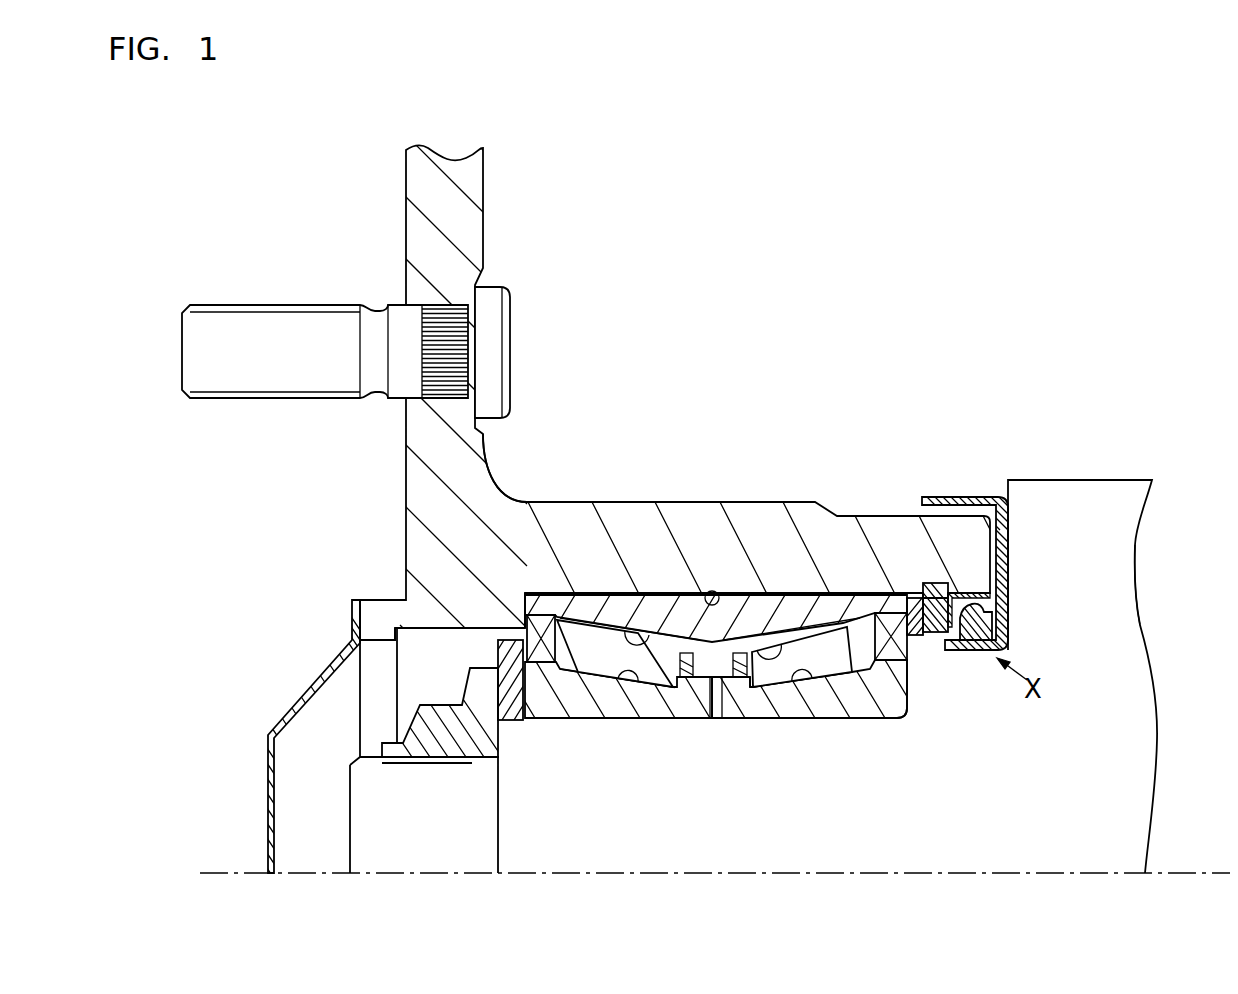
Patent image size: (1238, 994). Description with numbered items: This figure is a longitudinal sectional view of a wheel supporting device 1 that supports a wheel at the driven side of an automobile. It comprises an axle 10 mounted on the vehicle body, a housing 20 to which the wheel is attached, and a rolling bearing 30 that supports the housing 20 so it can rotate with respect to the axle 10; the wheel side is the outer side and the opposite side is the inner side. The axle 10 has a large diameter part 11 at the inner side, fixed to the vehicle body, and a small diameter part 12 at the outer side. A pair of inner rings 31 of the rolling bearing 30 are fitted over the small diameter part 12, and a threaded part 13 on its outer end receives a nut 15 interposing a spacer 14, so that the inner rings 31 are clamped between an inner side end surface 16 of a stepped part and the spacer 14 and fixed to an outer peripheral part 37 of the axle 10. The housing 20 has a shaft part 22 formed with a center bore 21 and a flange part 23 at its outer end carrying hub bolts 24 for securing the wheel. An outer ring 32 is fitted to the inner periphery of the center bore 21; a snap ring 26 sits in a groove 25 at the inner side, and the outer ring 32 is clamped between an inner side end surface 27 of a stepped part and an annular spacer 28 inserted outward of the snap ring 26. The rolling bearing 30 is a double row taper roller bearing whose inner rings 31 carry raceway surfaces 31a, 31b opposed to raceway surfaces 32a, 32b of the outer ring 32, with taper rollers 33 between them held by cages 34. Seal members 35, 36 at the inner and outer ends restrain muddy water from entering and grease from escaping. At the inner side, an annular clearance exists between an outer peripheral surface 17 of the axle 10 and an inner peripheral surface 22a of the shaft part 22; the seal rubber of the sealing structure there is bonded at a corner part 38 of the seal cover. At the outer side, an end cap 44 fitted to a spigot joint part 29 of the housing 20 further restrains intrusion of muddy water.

The wheel supporting device 1 is at (1027, 268).
The axle 10 is at (1088, 476).
The large diameter part 11 is at (1128, 545).
The small diameter part 12 is at (693, 874).
The threaded part 13 is at (375, 766).
The spacer 14 is at (497, 662).
The nut 15 is at (445, 712).
The inner side end surface 16 is at (908, 700).
The outer peripheral surface 17 is at (925, 649).
The housing 20 is at (617, 498).
The center bore 21 is at (712, 591).
The shaft part 22 is at (757, 508).
The inner peripheral surface 22a is at (1004, 600).
The flange part 23 is at (483, 441).
The hub bolts 24 is at (493, 327).
The groove 25 is at (910, 597).
The snap ring 26 is at (941, 582).
The inner side end surface 27 is at (538, 597).
The spacer 28 is at (900, 590).
The spigot joint part 29 is at (388, 600).
The rolling bearing 30 is at (650, 718).
The inner rings 31 is at (573, 718).
The raceway surface 31a is at (812, 690).
The raceway surface 31b is at (622, 684).
The outer ring 32 is at (632, 596).
The raceway surface 32a is at (792, 618).
The raceway surface 32b is at (630, 618).
The taper rollers 33 is at (668, 705).
The cages 34 is at (715, 718).
The seal member 35 is at (892, 661).
The seal member 36 is at (540, 663).
The outer peripheral part 37 is at (790, 718).
The corner part 38 is at (1003, 642).
The end cap 44 is at (347, 648).